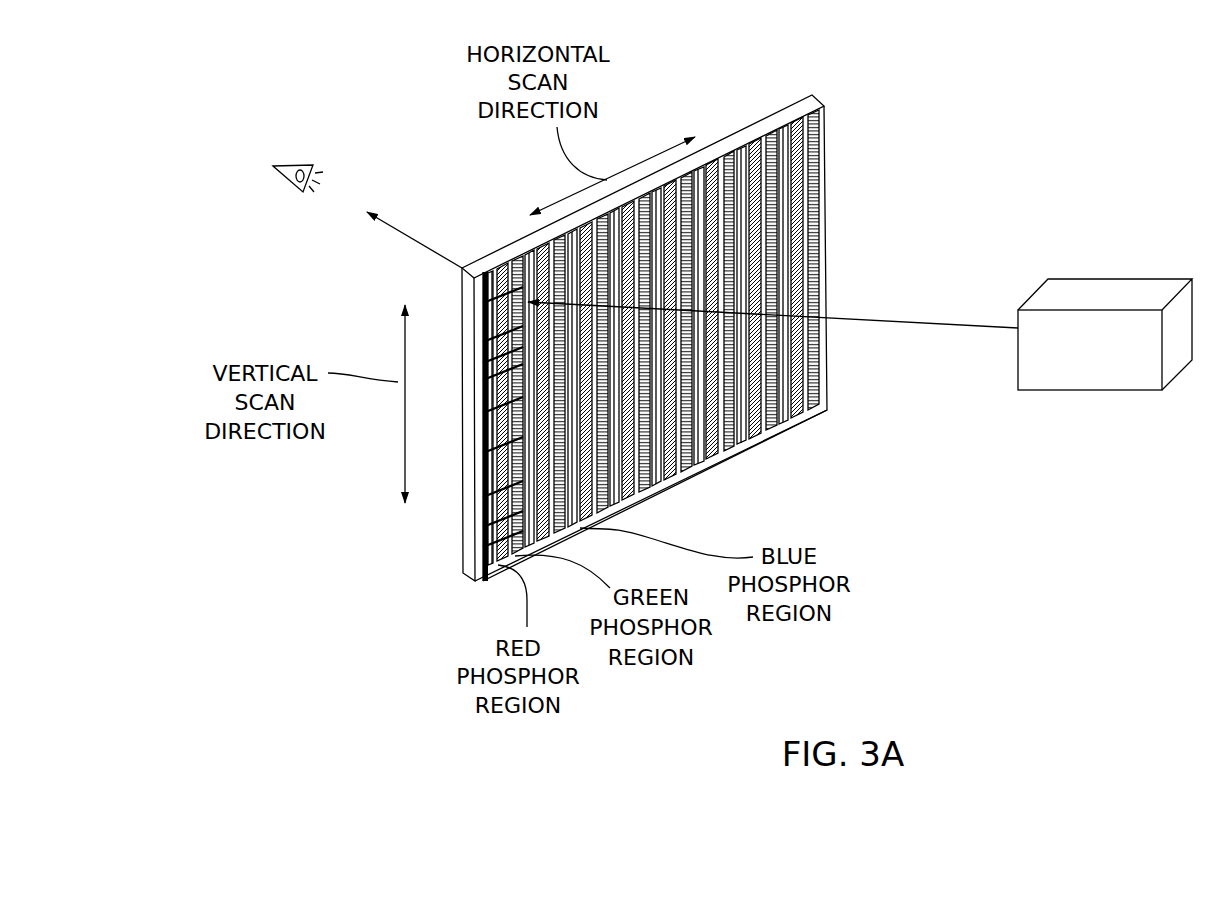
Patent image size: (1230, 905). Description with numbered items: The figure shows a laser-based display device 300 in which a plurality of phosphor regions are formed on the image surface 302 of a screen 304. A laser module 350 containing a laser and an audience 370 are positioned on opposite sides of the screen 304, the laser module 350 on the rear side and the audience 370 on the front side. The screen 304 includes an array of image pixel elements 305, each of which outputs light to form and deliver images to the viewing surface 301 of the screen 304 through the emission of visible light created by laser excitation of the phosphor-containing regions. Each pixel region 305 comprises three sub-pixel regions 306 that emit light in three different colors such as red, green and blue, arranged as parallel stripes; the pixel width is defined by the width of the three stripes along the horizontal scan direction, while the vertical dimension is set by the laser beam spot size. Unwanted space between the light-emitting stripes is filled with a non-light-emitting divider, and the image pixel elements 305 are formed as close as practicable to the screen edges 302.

The laser-based display device 300 is at (977, 157).
The viewing surface 301 is at (797, 100).
The image surface 302 is at (765, 118).
The screen 304 is at (830, 128).
The image pixel element 305 is at (474, 300).
The sub-pixel region 306 is at (483, 267).
The laser module 350 is at (1095, 268).
The audience 370 is at (285, 195).